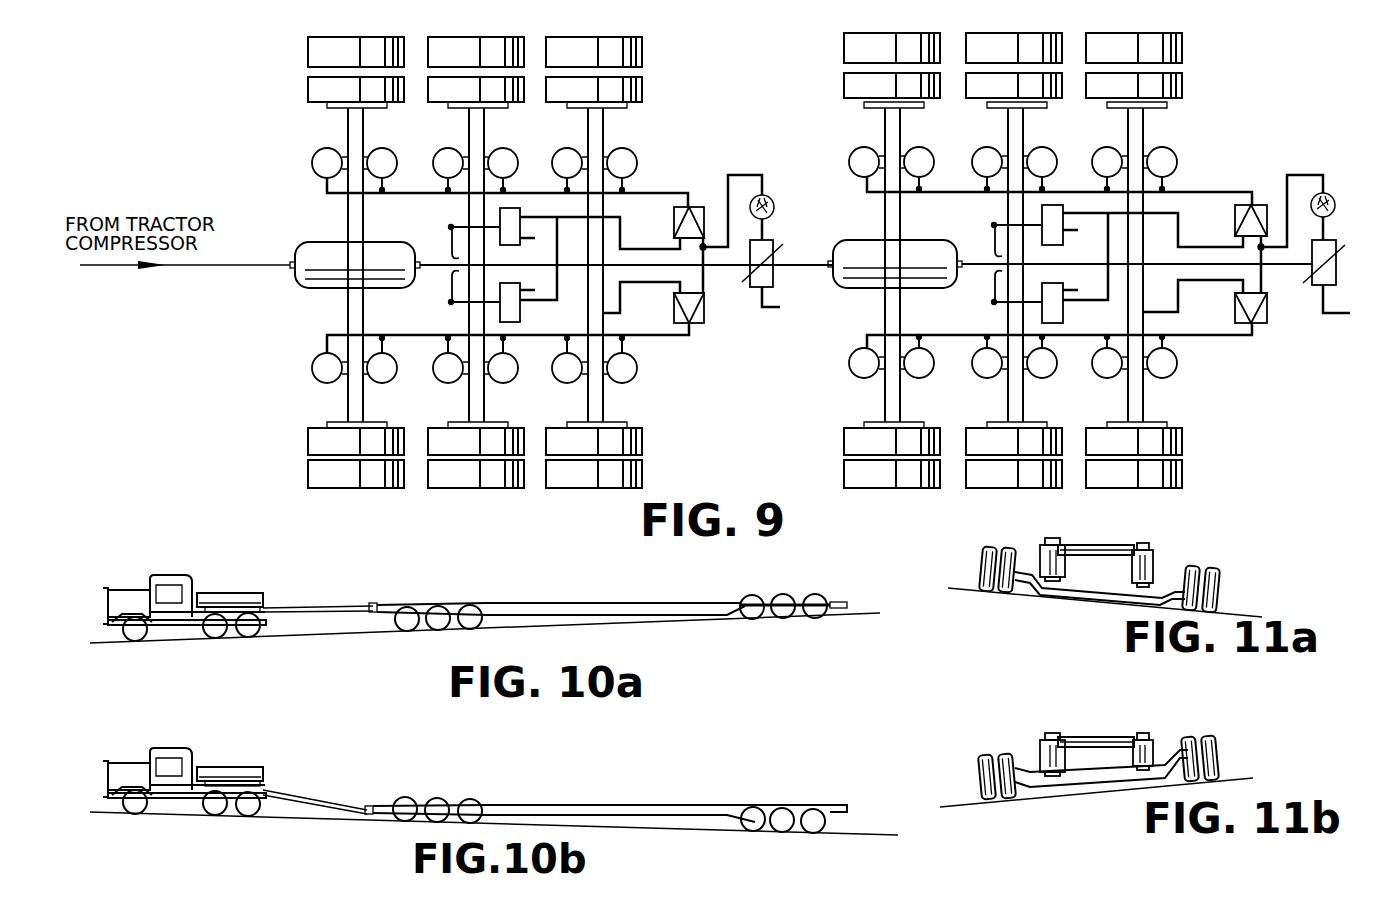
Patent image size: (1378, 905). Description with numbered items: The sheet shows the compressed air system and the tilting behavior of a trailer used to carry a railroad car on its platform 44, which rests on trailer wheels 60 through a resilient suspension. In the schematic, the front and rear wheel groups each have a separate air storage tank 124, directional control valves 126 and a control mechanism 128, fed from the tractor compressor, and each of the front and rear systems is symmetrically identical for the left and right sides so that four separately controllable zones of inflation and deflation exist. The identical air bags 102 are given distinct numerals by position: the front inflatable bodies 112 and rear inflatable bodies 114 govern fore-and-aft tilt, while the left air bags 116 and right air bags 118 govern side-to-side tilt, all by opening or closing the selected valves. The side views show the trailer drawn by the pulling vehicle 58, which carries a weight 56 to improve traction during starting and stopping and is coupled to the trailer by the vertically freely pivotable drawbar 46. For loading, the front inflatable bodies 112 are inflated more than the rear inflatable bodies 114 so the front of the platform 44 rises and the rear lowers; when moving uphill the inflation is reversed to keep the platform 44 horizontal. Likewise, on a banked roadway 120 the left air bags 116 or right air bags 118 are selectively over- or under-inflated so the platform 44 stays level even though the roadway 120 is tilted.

In FIG. 10A, the platform 44 is at (632, 600).
In FIG. 10B, the platform 44 is at (607, 803).
In FIG. 11A, the platform 44 is at (1080, 545).
In FIG. 11B, the platform 44 is at (1090, 737).
In FIG. 10A, the drawbar 46 is at (290, 598).
In FIG. 10B, the drawbar 46 is at (339, 798).
In FIG. 10A, the weight 56 is at (242, 595).
In FIG. 10B, the weight 56 is at (232, 767).
In FIG. 10A, the pulling vehicle 58 is at (172, 585).
In FIG. 10B, the pulling vehicle 58 is at (175, 747).
In FIG. 9, the trailer wheels 60 is at (312, 55).
In FIG. 10A, the trailer wheels 60 is at (463, 627).
In FIG. 10B, the trailer wheels 60 is at (465, 800).
In FIG. 11A, the trailer wheels 60 is at (985, 548).
In FIG. 11B, the trailer wheels 60 is at (990, 754).
In FIG. 9, the air bags 102 is at (325, 152).
In FIG. 11A, the air bags 102 is at (1040, 560).
In FIG. 11B, the air bags 102 is at (1040, 756).
In FIG. 9, the front inflatable bodies 112 is at (552, 163).
In FIG. 9, the rear inflatable bodies 114 is at (860, 150).
In FIG. 9, the left air bags 116 is at (328, 383).
In FIG. 9, the right air bags 118 is at (855, 165).
In FIG. 10A, the roadway 120 is at (557, 628).
In FIG. 10B, the roadway 120 is at (580, 826).
In FIG. 11A, the roadway 120 is at (1065, 600).
In FIG. 11B, the roadway 120 is at (1080, 792).
In FIG. 9, the air storage tanks 124 is at (317, 287).
In FIG. 9, the directional control valves 126 is at (677, 218).
In FIG. 9, the control mechanisms 128 is at (515, 287).